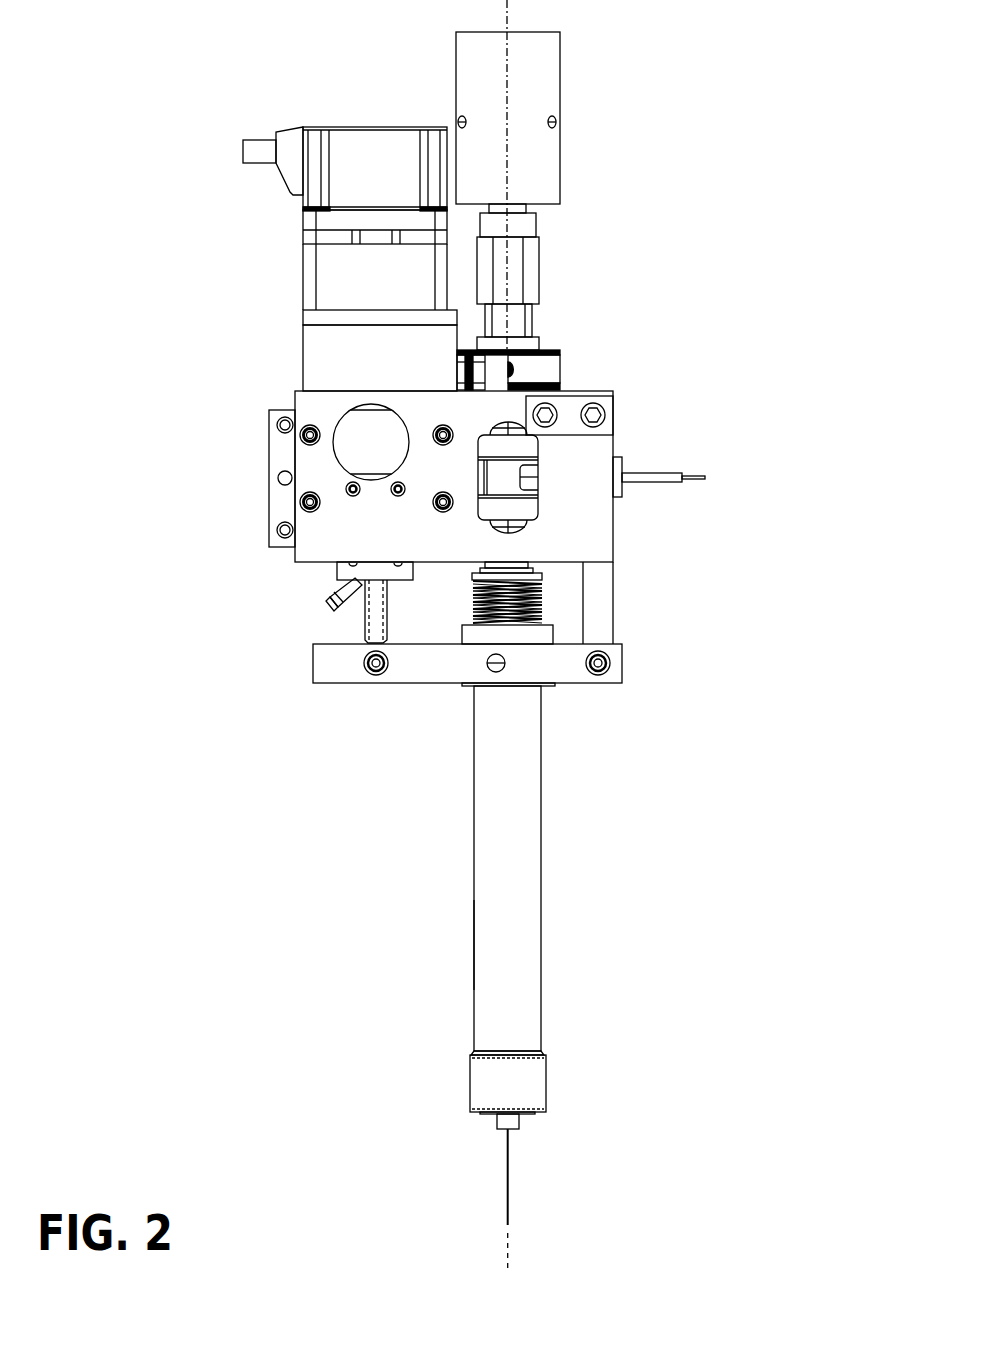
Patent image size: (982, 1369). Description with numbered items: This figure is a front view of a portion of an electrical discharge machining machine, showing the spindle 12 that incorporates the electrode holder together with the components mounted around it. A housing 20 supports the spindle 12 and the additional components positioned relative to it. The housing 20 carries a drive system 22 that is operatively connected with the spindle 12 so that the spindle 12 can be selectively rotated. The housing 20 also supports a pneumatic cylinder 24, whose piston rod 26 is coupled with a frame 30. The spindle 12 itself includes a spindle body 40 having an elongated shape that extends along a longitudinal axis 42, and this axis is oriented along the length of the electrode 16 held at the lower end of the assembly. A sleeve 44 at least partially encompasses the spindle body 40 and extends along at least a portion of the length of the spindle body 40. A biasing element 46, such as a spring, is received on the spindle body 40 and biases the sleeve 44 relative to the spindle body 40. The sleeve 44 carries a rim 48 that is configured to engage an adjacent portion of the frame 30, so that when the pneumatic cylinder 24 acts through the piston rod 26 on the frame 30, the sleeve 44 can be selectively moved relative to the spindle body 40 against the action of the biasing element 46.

The spindle 12 is at (580, 940).
The electrode 16 is at (508, 1180).
The housing 20 is at (590, 518).
The drive system 22 is at (553, 368).
The pneumatic cylinder 24 is at (337, 572).
The piston rod 26 is at (370, 623).
The frame 30 is at (330, 683).
The spindle body 40 is at (522, 777).
The longitudinal axis 42 is at (507, 2).
The sleeve 44 is at (474, 945).
The biasing element 46 is at (543, 598).
The rim 48 is at (542, 635).